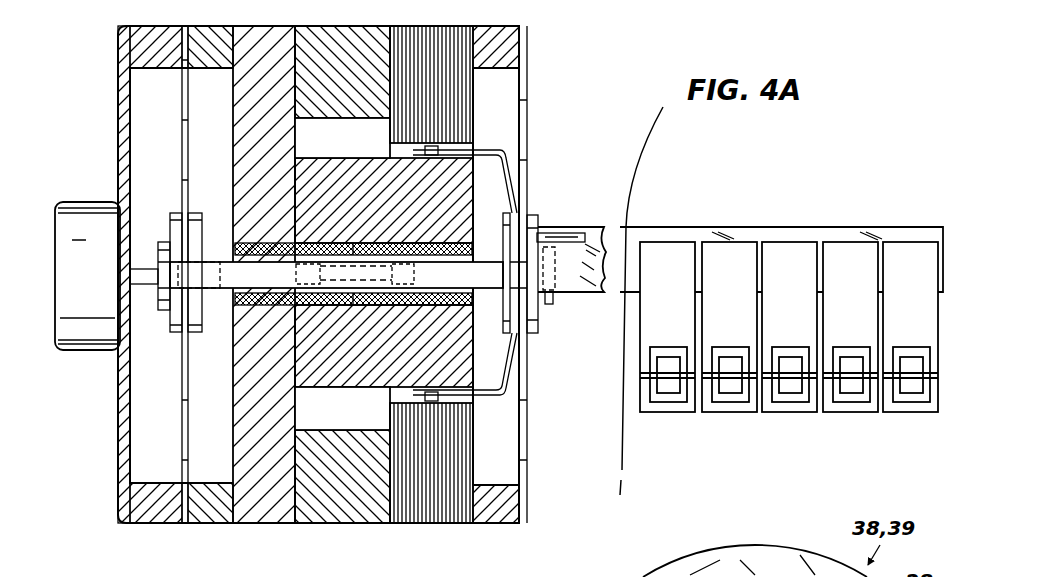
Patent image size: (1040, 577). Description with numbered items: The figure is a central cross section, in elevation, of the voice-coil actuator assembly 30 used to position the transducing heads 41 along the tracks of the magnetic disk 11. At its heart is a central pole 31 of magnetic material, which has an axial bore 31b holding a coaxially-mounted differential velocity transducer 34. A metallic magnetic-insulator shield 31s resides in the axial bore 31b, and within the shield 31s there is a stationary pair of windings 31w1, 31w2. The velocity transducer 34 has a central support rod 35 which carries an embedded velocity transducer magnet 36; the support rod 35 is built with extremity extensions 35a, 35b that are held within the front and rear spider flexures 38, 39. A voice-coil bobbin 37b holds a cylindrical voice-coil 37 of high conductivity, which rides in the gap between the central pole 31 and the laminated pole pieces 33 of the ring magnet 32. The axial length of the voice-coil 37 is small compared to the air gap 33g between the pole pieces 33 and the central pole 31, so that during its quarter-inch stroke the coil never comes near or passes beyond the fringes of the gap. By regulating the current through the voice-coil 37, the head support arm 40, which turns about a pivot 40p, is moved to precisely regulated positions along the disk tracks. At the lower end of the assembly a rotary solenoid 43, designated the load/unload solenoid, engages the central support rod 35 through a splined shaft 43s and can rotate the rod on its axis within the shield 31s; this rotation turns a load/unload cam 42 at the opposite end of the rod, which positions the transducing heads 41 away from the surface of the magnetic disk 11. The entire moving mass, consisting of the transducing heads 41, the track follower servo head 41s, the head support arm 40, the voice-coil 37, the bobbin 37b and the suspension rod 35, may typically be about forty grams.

The voice-coil actuator assembly 30 is at (143, 24).
The central pole 31 is at (326, 163).
The winding 31w1 is at (462, 238).
The winding 31w2 is at (273, 242).
The magnetic-insulator shield 31s is at (450, 312).
The axial bore 31b is at (187, 353).
The ring magnet 32 is at (372, 515).
The laminated pole pieces 33 is at (443, 45).
The air gap 33g is at (390, 394).
The differential velocity transducer 34 is at (270, 308).
The central support rod 35 is at (259, 287).
The extremity extension 35a is at (556, 232).
The extremity extension 35b is at (173, 325).
The velocity transducer magnet 36 is at (344, 200).
The voice-coil 37 is at (433, 400).
The voice-coil bobbin 37b is at (497, 397).
The front spider flexure 38 is at (524, 78).
The rear spider flexure 39 is at (180, 422).
The head support arm 40 is at (820, 232).
The pivot 40p is at (560, 236).
The transducing heads 41 is at (915, 383).
The track follower servo head 41s is at (787, 395).
The load/unload cam 42 is at (551, 300).
The rotary solenoid 43 is at (82, 203).
The splined shaft 43s is at (150, 290).
The magnetic disk 11 is at (618, 412).